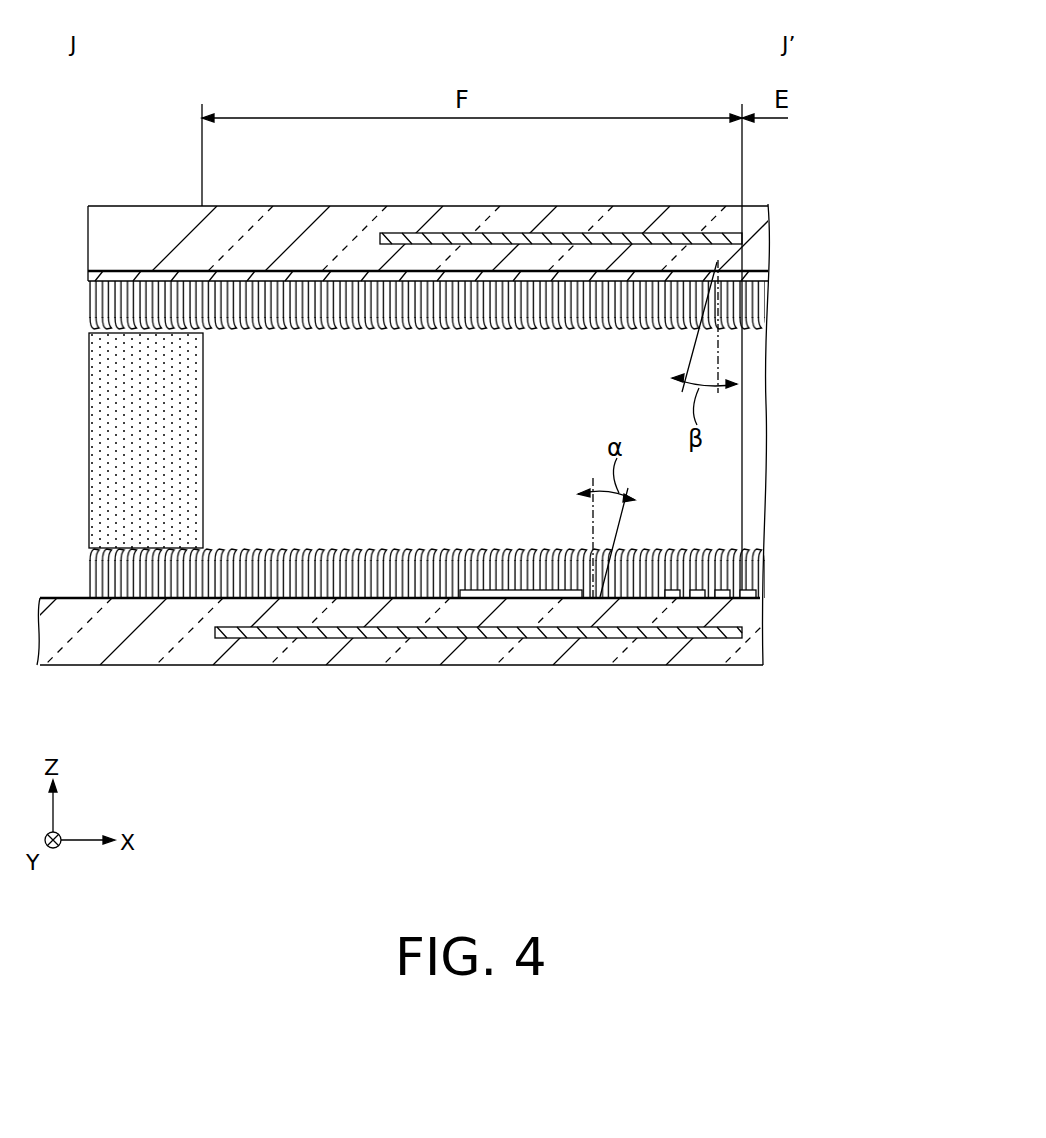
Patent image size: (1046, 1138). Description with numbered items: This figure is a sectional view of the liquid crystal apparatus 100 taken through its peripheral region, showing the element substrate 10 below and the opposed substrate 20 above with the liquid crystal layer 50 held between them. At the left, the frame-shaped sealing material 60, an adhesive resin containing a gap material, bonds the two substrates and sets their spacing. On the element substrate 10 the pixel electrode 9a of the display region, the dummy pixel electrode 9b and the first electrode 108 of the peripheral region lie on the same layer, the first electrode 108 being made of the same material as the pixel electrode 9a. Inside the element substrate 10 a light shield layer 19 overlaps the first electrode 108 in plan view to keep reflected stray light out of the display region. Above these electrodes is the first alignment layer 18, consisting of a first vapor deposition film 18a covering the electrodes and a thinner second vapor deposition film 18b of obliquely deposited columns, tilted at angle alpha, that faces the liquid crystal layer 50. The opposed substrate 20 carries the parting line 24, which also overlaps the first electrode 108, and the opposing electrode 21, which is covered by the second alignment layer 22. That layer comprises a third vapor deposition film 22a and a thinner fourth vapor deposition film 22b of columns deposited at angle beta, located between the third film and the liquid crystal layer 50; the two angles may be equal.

The liquid crystal apparatus 100 is at (873, 94).
The opposed substrate 20 is at (236, 218).
The opposing electrode 21 is at (303, 278).
The parting line 24 is at (568, 238).
The second alignment layer 22 is at (505, 289).
The third vapor deposition film 22a is at (773, 291).
The fourth vapor deposition film 22b is at (766, 335).
The liquid crystal layer 50 is at (748, 433).
The sealing material 60 is at (100, 462).
The first alignment layer 18 is at (505, 530).
The first vapor deposition film 18a is at (748, 579).
The second vapor deposition film 18b is at (748, 549).
The element substrate 10 is at (194, 662).
The first electrode 108 is at (521, 600).
The light shield layer 19 is at (638, 636).
The dummy pixel electrode 9b is at (722, 600).
The pixel electrode 9a is at (748, 600).